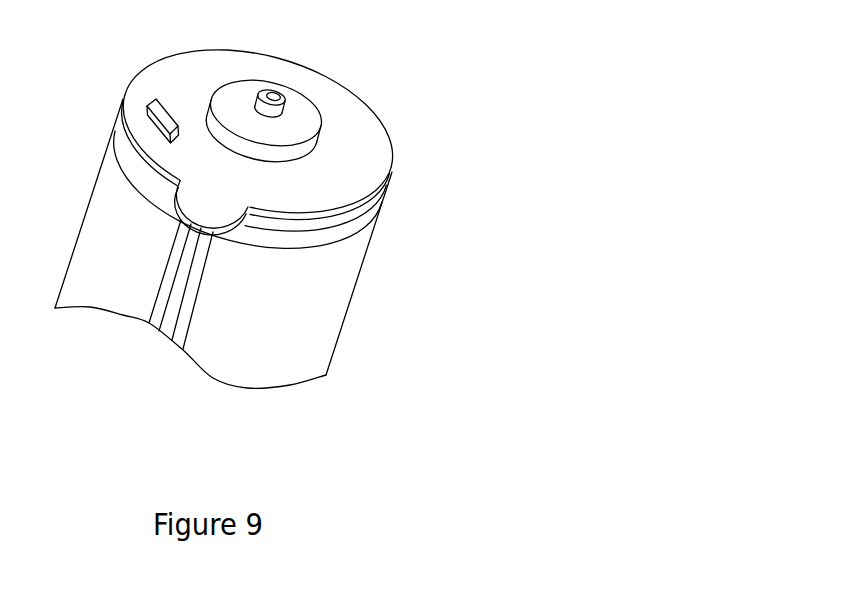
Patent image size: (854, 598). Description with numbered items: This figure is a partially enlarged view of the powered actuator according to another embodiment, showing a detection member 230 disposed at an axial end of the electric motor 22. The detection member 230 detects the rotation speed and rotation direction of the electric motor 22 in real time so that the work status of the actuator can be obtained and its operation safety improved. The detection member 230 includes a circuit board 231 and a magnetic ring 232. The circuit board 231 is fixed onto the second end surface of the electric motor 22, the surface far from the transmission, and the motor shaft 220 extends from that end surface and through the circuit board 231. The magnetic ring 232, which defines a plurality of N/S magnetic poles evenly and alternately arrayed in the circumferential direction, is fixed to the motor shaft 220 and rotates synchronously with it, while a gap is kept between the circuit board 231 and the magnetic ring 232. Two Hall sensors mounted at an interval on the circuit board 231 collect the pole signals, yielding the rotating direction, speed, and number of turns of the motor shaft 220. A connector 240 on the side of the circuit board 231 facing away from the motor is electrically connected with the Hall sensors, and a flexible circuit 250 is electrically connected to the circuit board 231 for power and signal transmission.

The electric motor 22 is at (348, 298).
The detection member 230 is at (389, 133).
The circuit board 231 is at (162, 63).
The motor shaft 220 is at (266, 93).
The magnetic ring 232 is at (298, 104).
The connector 240 is at (155, 100).
The flexible circuit 250 is at (178, 333).